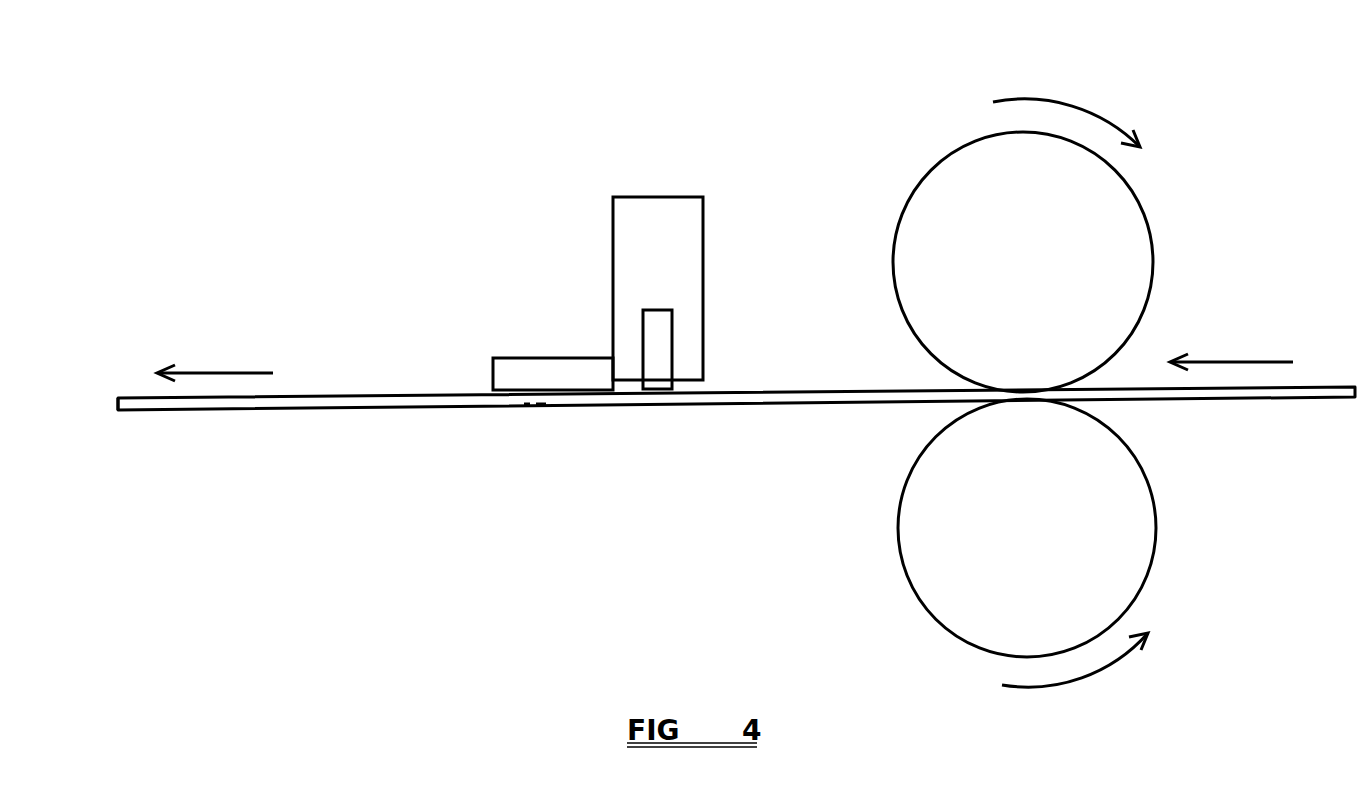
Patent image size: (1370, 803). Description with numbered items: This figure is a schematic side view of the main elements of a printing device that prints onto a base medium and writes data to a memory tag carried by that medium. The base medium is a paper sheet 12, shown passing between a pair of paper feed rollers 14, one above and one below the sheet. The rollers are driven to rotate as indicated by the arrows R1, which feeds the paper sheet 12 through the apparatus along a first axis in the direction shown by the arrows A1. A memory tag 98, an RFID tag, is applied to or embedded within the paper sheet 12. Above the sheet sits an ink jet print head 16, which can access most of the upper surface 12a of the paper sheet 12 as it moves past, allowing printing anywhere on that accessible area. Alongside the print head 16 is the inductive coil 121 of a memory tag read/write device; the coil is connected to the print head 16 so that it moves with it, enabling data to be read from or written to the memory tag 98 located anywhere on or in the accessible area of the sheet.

The paper sheet 12 is at (772, 421).
The upper surface 12a is at (217, 409).
The paper feed rollers 14 is at (1156, 257).
The print head 16 is at (692, 252).
The inductive coil 121 is at (558, 357).
The memory tag 98 is at (533, 407).
The rotation arrows R1 is at (1107, 120).
The feed direction arrows A1 is at (273, 373).